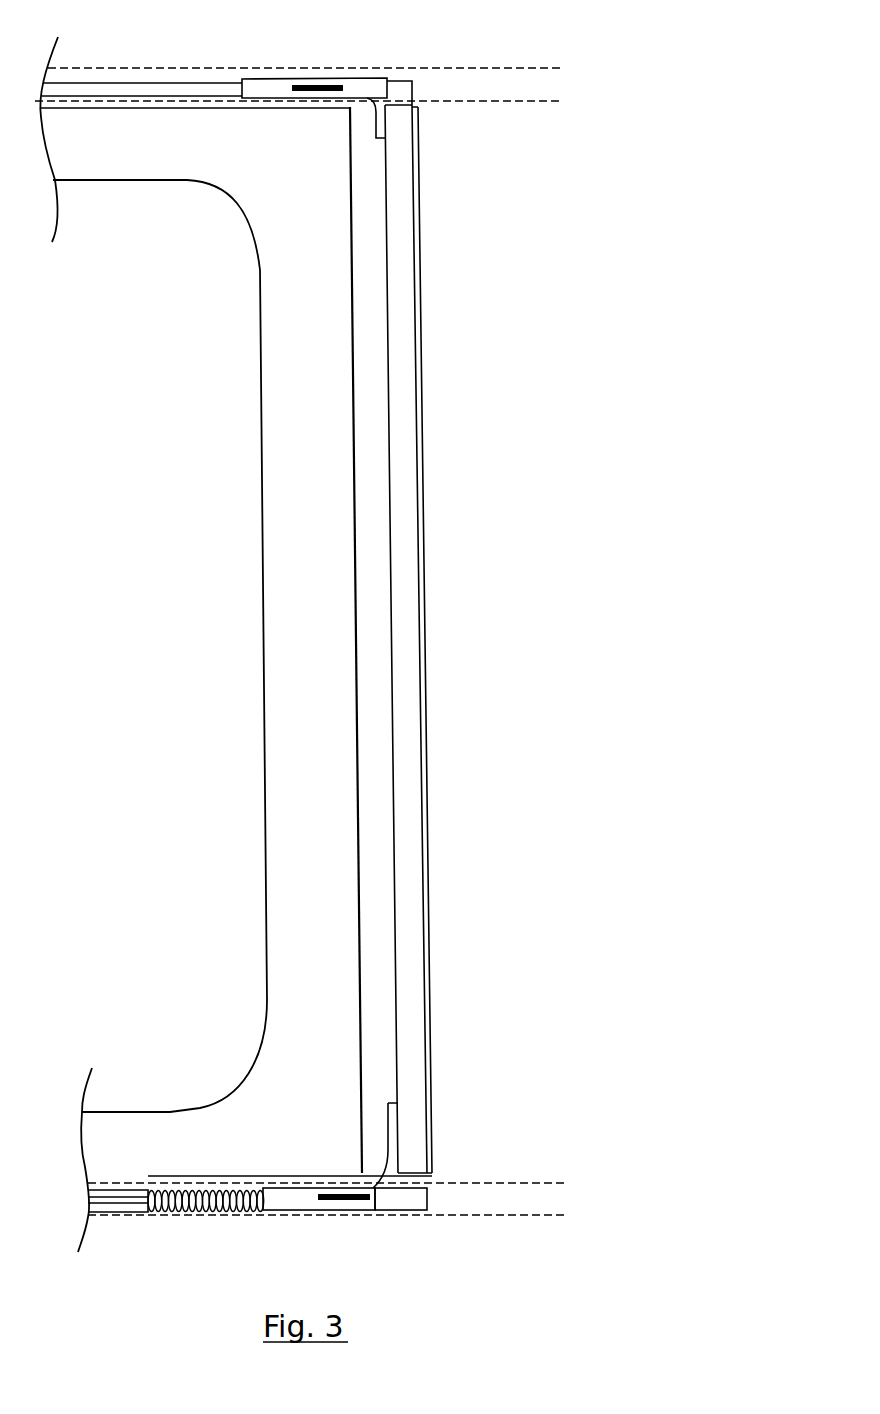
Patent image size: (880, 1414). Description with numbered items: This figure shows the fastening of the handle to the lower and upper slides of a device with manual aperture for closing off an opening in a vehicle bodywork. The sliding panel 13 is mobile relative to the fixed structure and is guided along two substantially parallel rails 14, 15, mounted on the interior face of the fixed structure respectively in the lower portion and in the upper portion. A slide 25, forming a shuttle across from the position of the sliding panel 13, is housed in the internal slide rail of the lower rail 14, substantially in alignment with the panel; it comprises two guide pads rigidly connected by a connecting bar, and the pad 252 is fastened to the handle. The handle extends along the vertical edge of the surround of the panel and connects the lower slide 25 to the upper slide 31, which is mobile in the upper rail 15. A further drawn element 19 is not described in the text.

The sliding panel 13 is at (355, 605).
The rail 14 is at (120, 1213).
The rail 15 is at (98, 68).
The guide rail 19 is at (405, 370).
The slide 25 is at (293, 1210).
The guide pad 252 is at (363, 1210).
The upper slide 31 is at (372, 83).